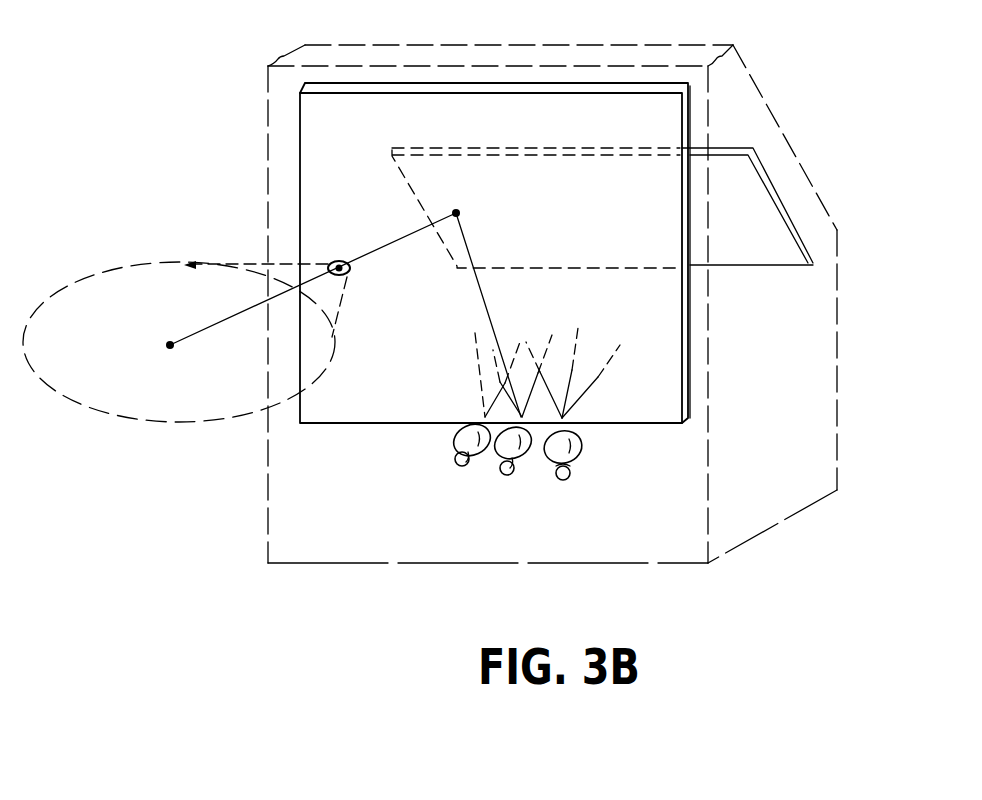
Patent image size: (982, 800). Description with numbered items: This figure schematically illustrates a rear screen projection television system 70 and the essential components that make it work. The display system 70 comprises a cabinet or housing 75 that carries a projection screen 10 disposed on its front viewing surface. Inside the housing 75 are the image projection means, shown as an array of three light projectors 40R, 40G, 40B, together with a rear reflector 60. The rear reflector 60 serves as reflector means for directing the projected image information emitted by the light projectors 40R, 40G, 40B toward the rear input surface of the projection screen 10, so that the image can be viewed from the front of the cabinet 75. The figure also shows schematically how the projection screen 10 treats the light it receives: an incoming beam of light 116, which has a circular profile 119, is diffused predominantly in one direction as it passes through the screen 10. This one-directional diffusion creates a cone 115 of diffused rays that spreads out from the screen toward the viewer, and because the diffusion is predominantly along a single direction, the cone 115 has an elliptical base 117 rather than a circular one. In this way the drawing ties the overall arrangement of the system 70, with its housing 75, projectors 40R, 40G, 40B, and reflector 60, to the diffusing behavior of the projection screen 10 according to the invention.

The projection screen 10 is at (684, 366).
The light projector 40R is at (457, 432).
The light projector 40G is at (525, 462).
The light projector 40B is at (582, 450).
The rear reflector 60 is at (777, 248).
The rear screen projection television system 70 is at (832, 76).
The housing 75 is at (838, 452).
The cone of diffused rays 115 is at (143, 424).
The incoming beam of light 116 is at (490, 315).
The elliptical base 117 is at (350, 271).
The circular profile 119 is at (340, 262).